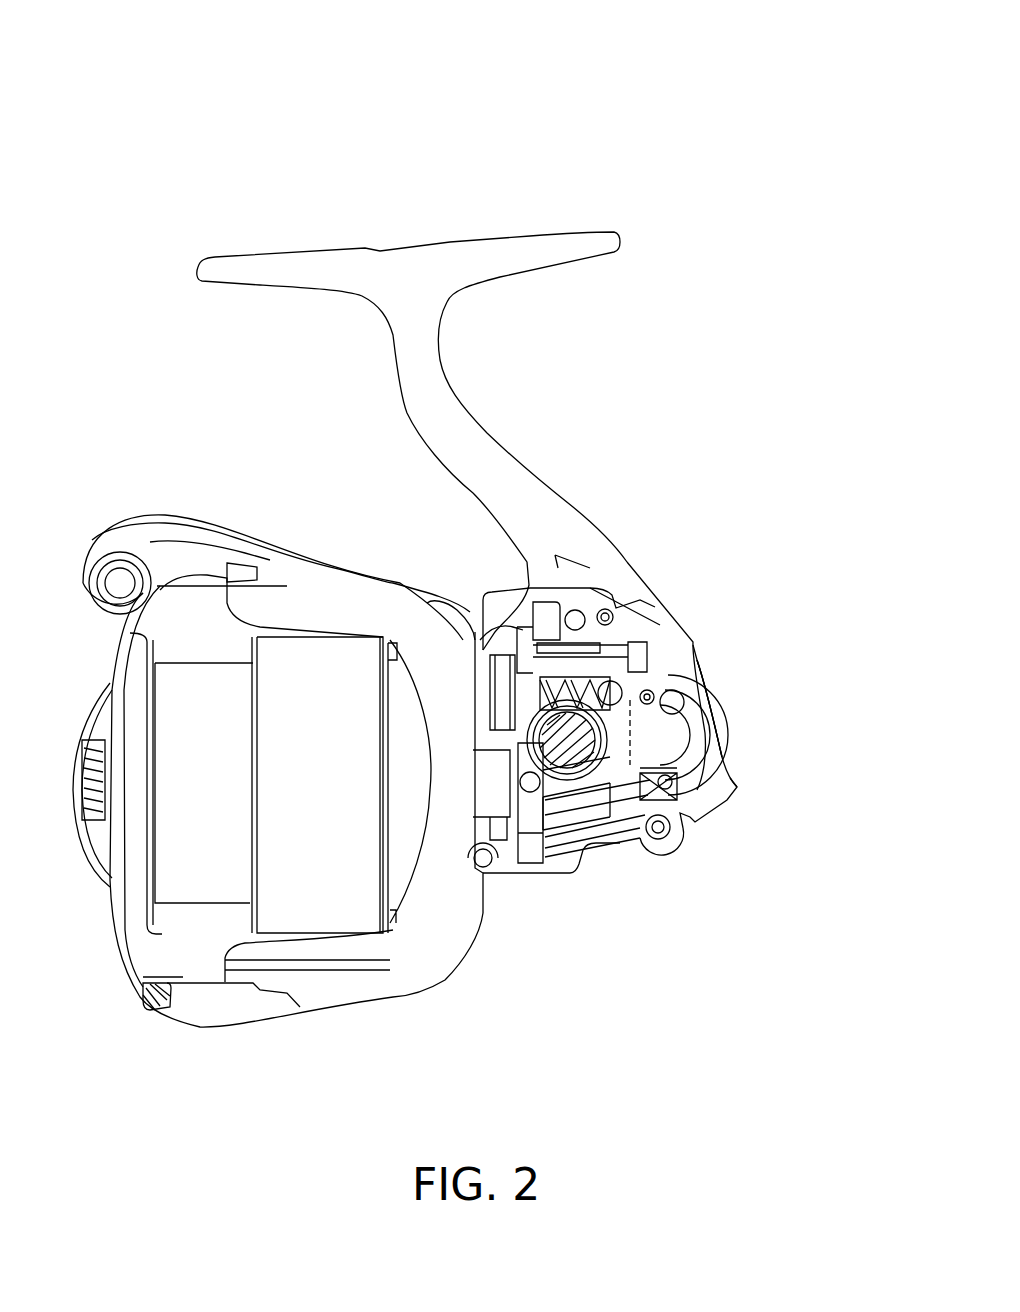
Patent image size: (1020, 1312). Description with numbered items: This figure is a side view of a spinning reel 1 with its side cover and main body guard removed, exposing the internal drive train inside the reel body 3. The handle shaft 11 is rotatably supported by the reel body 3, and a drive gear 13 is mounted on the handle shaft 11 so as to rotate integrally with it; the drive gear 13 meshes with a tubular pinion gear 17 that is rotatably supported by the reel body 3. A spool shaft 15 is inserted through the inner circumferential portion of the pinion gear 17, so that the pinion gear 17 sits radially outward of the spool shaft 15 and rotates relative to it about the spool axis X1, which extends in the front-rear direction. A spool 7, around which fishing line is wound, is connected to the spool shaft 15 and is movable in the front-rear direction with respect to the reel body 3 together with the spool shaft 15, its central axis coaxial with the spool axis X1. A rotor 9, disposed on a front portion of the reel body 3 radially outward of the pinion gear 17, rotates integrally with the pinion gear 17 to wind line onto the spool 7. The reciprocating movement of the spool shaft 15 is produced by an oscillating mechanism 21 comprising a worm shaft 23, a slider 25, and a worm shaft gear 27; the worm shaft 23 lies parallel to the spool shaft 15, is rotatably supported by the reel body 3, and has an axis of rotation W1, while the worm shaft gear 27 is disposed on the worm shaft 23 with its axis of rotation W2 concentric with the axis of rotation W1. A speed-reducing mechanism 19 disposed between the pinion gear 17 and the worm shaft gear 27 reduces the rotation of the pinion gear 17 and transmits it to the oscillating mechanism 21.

The spinning reel 1 is at (615, 137).
The reel body 3 is at (485, 402).
The spool 7 is at (202, 643).
The rotor 9 is at (202, 1047).
The handle shaft 11 is at (670, 833).
The drive gear 13 is at (563, 867).
The spool shaft 15 is at (617, 843).
The pinion gear 17 is at (490, 780).
The speed-reducing mechanism 19 is at (525, 883).
The oscillating mechanism 21 is at (713, 412).
The worm shaft 23 is at (572, 665).
The slider 25 is at (693, 670).
The worm shaft gear 27 is at (490, 630).
The axis of rotation W1 is at (708, 693).
The axis of rotation W2 is at (780, 708).
The spool axis X1 is at (740, 783).